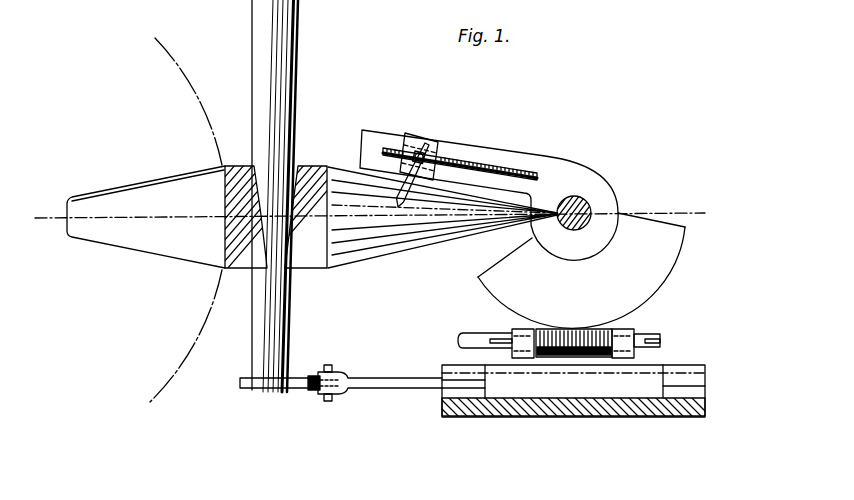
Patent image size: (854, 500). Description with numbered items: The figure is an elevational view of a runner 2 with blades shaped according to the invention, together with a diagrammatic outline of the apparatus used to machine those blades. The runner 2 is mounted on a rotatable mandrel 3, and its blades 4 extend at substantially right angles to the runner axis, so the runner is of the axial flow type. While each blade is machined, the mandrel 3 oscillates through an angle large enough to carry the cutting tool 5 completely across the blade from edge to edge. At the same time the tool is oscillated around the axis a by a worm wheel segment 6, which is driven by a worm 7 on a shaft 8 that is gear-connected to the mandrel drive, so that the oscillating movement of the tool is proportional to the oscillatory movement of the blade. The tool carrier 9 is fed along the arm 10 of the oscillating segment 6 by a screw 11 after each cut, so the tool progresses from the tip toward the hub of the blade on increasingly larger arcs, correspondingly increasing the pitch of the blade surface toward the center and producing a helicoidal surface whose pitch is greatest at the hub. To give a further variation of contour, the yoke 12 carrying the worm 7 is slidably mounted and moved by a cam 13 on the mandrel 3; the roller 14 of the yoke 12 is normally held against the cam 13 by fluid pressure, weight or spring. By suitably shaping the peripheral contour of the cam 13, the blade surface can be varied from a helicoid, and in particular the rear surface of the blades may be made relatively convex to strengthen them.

The runner 2 is at (223, 270).
The rotatable mandrel 3 is at (281, 58).
The blades 4 is at (130, 234).
The cutting tool 5 is at (401, 148).
The worm wheel segment 6 is at (581, 270).
The worm 7 is at (598, 336).
The shaft 8 is at (477, 334).
The tool carrier 9 is at (437, 147).
The arm 10 is at (497, 156).
The screw 11 is at (530, 168).
The yoke 12 is at (622, 363).
The cam 13 is at (258, 384).
The roller 14 is at (350, 370).
The axis a is at (589, 206).